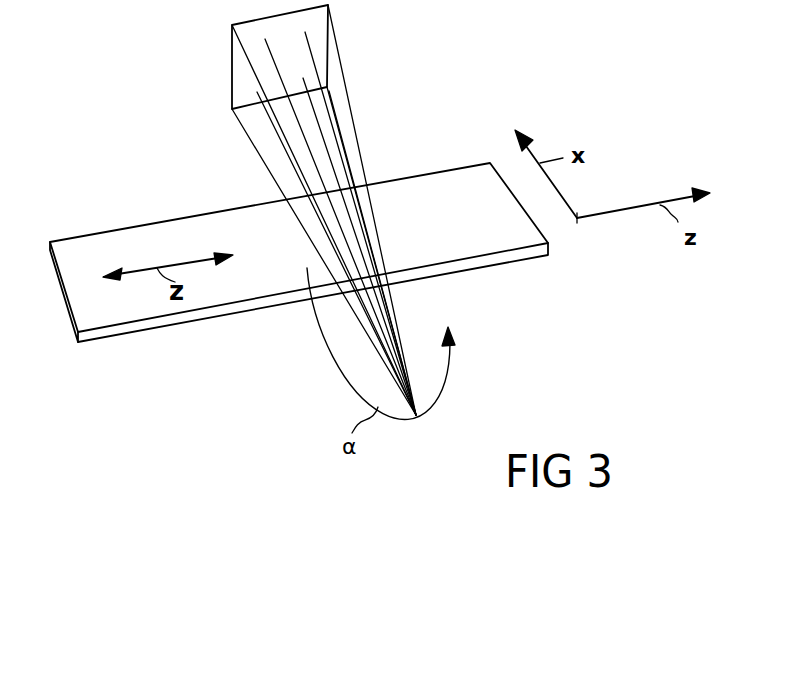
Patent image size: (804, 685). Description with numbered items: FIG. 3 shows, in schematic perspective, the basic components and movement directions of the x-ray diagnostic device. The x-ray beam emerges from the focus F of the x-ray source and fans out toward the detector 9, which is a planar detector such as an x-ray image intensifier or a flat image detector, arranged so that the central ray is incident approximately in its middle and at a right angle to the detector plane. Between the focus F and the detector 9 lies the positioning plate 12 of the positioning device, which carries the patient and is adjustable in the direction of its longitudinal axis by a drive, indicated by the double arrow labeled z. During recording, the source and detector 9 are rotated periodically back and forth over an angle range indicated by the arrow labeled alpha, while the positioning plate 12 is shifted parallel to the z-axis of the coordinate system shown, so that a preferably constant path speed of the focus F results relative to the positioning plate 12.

The detector 9 is at (232, 79).
The positioning plate 12 is at (463, 232).
The focus F is at (416, 415).